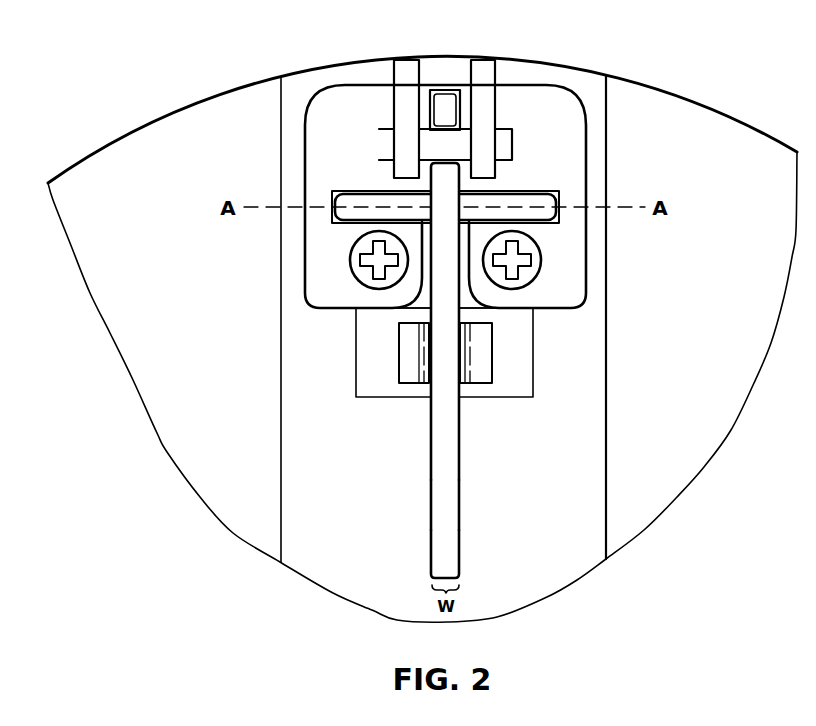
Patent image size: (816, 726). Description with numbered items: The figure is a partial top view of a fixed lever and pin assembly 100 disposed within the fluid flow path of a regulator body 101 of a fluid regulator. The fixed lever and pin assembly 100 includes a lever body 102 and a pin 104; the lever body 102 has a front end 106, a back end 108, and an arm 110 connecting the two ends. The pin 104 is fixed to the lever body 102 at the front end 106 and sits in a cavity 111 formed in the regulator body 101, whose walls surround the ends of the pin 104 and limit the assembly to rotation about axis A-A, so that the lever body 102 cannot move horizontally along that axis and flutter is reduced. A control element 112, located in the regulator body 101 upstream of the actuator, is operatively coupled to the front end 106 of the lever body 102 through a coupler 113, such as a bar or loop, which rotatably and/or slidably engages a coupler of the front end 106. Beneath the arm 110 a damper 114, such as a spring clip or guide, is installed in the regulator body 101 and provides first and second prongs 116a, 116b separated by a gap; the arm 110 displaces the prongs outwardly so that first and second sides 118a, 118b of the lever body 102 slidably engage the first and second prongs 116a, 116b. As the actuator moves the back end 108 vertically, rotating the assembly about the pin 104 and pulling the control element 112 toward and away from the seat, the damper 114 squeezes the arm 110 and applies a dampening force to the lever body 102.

The fixed lever and pin assembly 100 is at (232, 127).
The regulator body 101 is at (586, 425).
The lever body 102 is at (442, 313).
The pin 104 is at (532, 200).
The front end 106 is at (463, 183).
The back end 108 is at (460, 548).
The arm 110 is at (460, 482).
The cavity 111 is at (333, 198).
The control element 112 is at (405, 80).
The coupler 113 is at (464, 140).
The damper 114 is at (390, 363).
The first prong 116a is at (409, 373).
The second prong 116b is at (480, 363).
The first side 118a is at (430, 512).
The second side 118b is at (460, 512).